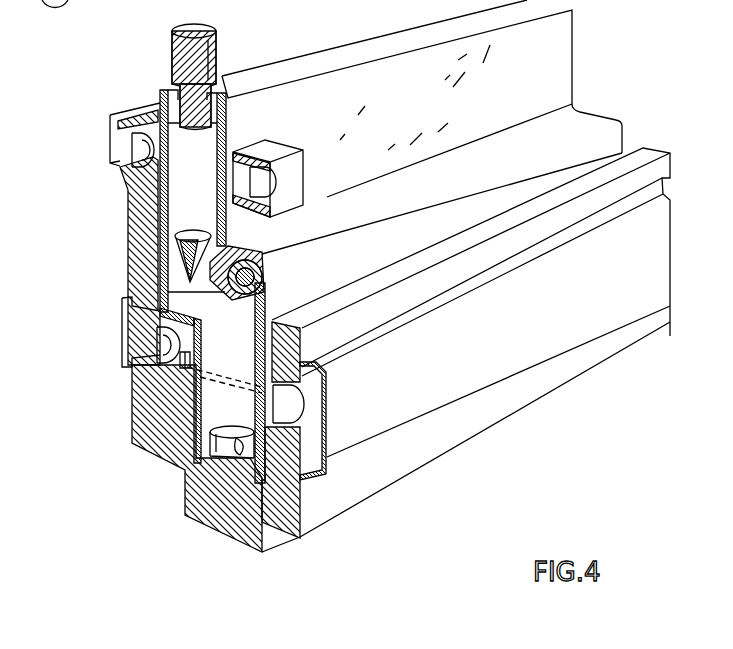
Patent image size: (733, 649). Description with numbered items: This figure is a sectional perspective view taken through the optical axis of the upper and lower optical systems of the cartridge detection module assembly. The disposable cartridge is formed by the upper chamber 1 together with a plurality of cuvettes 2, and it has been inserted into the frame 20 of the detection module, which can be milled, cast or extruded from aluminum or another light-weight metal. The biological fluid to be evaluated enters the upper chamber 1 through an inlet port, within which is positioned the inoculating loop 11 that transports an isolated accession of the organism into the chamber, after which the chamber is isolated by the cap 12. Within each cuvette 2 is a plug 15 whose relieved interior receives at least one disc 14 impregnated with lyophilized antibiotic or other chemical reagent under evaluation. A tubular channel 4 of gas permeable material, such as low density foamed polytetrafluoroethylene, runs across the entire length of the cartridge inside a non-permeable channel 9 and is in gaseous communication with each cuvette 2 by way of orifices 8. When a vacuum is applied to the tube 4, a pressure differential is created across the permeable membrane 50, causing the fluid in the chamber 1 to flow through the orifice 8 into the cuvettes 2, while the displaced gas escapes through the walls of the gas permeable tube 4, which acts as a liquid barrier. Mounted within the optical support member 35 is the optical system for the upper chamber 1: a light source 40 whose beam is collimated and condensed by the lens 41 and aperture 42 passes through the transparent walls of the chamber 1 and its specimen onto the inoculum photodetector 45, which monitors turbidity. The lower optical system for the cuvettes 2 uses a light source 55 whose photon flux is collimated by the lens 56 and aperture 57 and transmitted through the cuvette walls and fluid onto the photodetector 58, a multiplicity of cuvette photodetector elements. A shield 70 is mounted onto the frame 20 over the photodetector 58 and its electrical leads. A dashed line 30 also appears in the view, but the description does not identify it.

The upper chamber 1 is at (377, 80).
The cuvettes 2 is at (198, 330).
The tubular channel 4 is at (258, 278).
The orifices 8 is at (246, 383).
The non-permeable channel 9 is at (242, 248).
The inoculating loop 11 is at (185, 172).
The cap 12 is at (177, 22).
The discs 14 is at (238, 432).
The plug 15 is at (223, 422).
The frame 20 is at (127, 200).
The axis line 30 is at (247, 357).
The optical support member 35 is at (268, 140).
The light source 40 is at (110, 147).
The lens 41 is at (133, 152).
The aperture 42 is at (152, 125).
The inoculum photodetector 45 is at (265, 186).
The permeable membrane 50 is at (183, 244).
The light source 55 is at (118, 320).
The lens 56 is at (166, 343).
The aperture 57 is at (185, 364).
The photodetector 58 is at (327, 452).
The shield 70 is at (450, 410).